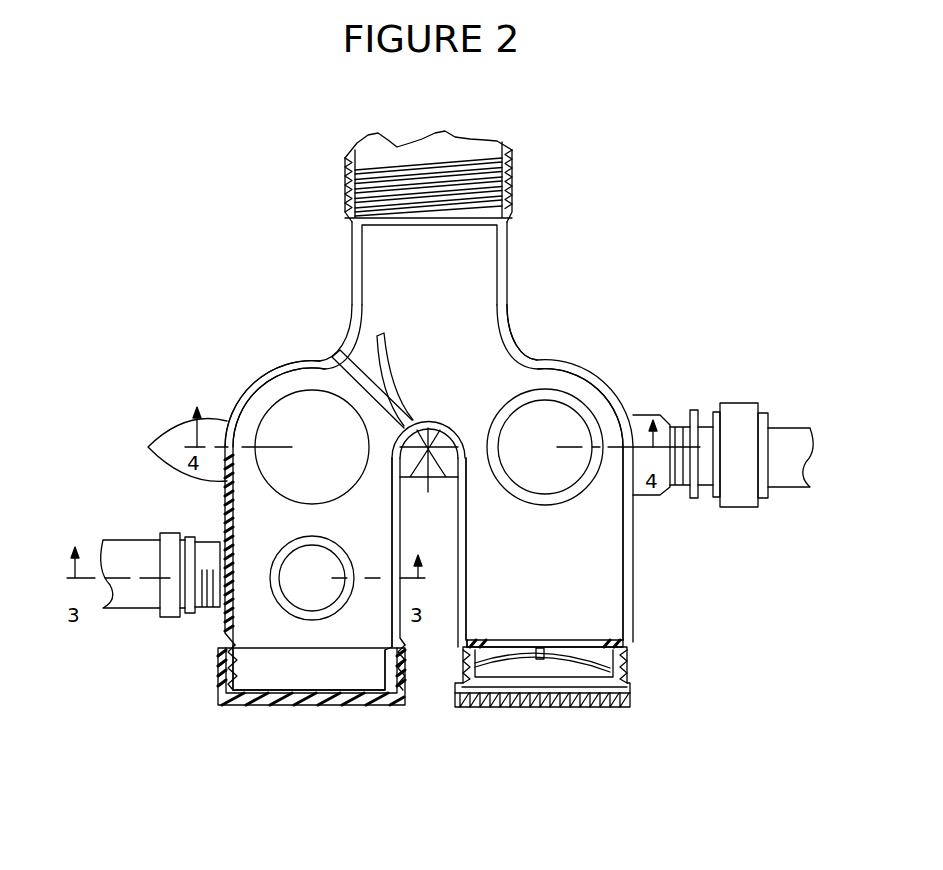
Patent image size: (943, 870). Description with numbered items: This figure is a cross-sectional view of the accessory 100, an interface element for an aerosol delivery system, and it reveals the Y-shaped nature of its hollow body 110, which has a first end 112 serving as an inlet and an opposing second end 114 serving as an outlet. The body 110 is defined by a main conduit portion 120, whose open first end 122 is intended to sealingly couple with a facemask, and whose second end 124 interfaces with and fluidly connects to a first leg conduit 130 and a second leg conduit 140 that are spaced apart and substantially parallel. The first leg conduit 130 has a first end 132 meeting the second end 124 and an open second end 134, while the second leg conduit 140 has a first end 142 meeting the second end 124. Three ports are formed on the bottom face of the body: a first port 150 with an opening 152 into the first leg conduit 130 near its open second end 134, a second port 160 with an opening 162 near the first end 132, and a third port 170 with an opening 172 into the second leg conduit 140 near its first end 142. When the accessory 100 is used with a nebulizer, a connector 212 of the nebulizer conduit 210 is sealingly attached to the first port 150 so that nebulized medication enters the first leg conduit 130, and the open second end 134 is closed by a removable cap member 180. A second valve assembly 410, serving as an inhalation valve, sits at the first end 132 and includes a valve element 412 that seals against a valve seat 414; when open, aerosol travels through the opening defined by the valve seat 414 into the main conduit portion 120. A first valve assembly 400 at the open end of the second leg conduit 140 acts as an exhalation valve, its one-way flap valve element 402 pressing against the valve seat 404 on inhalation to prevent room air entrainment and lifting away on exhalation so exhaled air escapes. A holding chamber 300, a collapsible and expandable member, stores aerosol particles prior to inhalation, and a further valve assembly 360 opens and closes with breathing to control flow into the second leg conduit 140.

The accessory 100 is at (646, 567).
The body 110 is at (514, 338).
The first end 112 is at (312, 703).
The second end 114 is at (513, 183).
The main conduit portion 120 is at (470, 262).
The open first end 122 is at (353, 157).
The second end 124 is at (429, 474).
The first leg conduit 130 is at (260, 408).
The first end 132 is at (394, 460).
The open second end 134 is at (357, 703).
The second leg conduit 140 is at (573, 528).
The first end 142 is at (463, 460).
The first port 150 is at (282, 607).
The opening 152 is at (343, 607).
The second port 160 is at (298, 390).
The opening 162 is at (290, 395).
The third port 170 is at (570, 405).
The opening 172 is at (547, 390).
The cap member 180 is at (243, 703).
The conduit 210 is at (143, 553).
The connector 212 is at (197, 610).
The holding chamber 300 is at (150, 445).
The valve assembly 360 is at (737, 428).
The first valve assembly 400 is at (540, 708).
The valve element 402 is at (518, 652).
The valve seat 404 is at (618, 647).
The second valve assembly 410 is at (405, 351).
The valve element 412 is at (387, 365).
The valve seat 414 is at (339, 351).